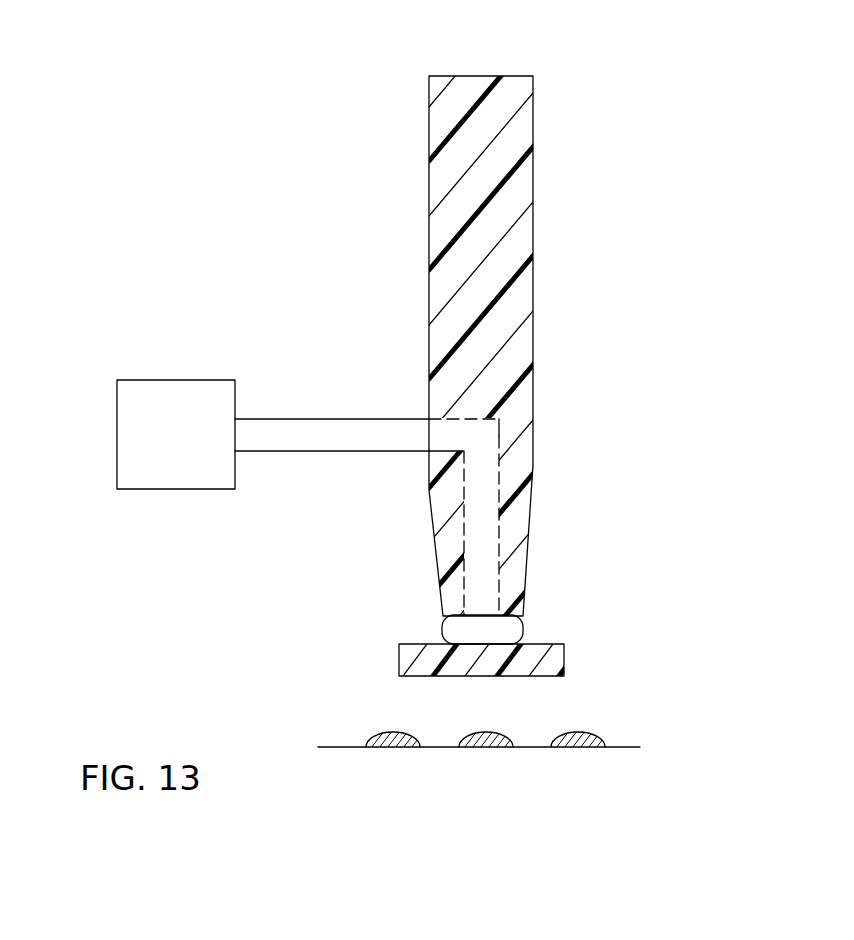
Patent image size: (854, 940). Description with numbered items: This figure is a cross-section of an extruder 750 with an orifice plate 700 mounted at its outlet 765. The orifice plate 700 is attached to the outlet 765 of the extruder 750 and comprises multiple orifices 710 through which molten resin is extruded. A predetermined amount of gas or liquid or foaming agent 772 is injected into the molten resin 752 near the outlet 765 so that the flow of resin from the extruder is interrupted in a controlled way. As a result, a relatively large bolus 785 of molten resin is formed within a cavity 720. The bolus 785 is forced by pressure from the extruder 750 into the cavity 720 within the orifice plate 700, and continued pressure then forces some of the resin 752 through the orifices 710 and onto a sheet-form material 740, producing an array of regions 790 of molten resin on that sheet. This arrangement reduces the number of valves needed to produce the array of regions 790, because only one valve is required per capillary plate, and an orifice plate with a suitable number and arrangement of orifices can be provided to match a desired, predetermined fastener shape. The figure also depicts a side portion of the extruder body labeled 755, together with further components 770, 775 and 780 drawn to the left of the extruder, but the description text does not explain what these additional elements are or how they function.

The orifice plate 700 is at (574, 655).
The orifices 710 is at (535, 676).
The cavity 720 is at (550, 645).
The sheet-form material 740 is at (337, 747).
The extruder 750 is at (537, 64).
The molten resin 752 is at (513, 208).
The tool body side wall 755 is at (533, 473).
The outlet 765 is at (445, 645).
The actuator assembly 770 is at (104, 506).
The gas or liquid or foaming agent 772 is at (500, 630).
The actuator / controller 775 is at (192, 388).
The connecting arm / conduit 780 is at (366, 418).
The bolus 785 is at (399, 660).
The regions of molten resin 790 is at (590, 730).